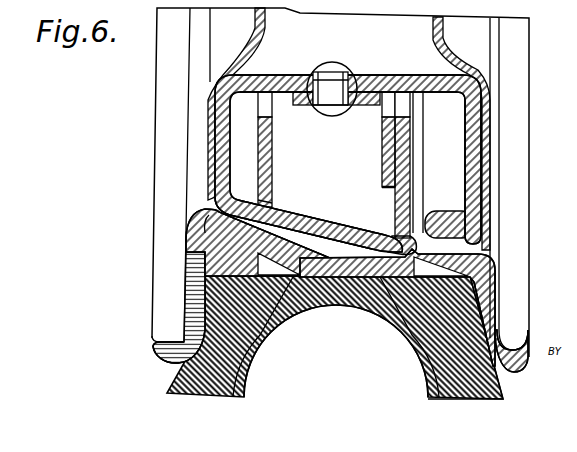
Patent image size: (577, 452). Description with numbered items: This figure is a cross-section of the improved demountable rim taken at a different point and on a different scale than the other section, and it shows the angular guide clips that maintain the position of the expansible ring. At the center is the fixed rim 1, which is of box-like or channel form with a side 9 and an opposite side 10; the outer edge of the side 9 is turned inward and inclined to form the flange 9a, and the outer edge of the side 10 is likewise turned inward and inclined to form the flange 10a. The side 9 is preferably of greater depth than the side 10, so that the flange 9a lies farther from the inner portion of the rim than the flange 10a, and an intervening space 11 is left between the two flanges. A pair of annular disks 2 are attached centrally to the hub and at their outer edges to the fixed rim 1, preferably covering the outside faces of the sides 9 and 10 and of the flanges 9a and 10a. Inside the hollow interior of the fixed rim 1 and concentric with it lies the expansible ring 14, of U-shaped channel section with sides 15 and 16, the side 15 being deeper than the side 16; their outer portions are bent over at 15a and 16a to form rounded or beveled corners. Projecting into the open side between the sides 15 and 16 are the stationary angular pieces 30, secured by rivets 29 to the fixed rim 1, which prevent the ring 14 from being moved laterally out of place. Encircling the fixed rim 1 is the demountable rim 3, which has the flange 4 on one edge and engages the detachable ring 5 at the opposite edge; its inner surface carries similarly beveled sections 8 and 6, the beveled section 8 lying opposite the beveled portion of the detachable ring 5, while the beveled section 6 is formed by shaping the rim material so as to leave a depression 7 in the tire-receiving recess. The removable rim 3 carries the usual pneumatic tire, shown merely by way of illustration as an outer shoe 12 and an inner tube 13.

The fixed rim 1 is at (348, 70).
The annular disks 2 is at (451, 42).
The demountable rim 3 is at (336, 318).
The flange 4 is at (515, 345).
The detachable ring 5 is at (153, 350).
The beveled section 6 is at (393, 247).
The depression 7 is at (388, 327).
The beveled section 8 is at (200, 226).
The side 9 is at (487, 158).
The flange 9a is at (437, 222).
The side 10 is at (210, 142).
The flange 10a is at (227, 200).
The intervening space 11 is at (347, 236).
The outer shoe 12 is at (504, 393).
The inner tube 13 is at (414, 369).
The expansible ring 14 is at (309, 223).
The side 15 is at (404, 165).
The bent-over portion 15a is at (392, 235).
The side 16 is at (273, 178).
The bent-over portion 16a is at (277, 206).
The rivets 29 is at (342, 63).
The angular pieces 30 is at (383, 150).